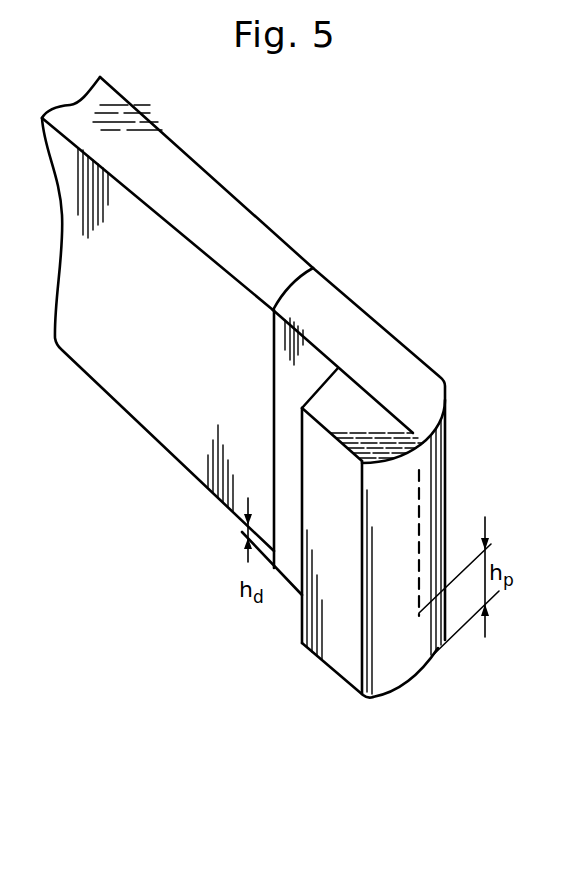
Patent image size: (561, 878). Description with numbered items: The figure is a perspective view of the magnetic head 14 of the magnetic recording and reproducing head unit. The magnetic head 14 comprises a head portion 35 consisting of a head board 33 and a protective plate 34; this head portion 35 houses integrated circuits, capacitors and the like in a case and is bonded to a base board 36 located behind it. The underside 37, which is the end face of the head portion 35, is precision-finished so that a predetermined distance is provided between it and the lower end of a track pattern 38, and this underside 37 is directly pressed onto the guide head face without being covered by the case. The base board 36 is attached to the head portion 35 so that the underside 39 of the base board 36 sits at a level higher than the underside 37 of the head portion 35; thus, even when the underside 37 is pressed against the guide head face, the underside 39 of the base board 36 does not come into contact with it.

The magnetic head 14 is at (370, 272).
The head board 33 is at (403, 362).
The protective plate 34 is at (332, 650).
The head portion 35 is at (450, 448).
The base board 36 is at (258, 240).
The underside 37 is at (417, 677).
The track pattern 38 is at (420, 510).
The underside 39 is at (190, 475).